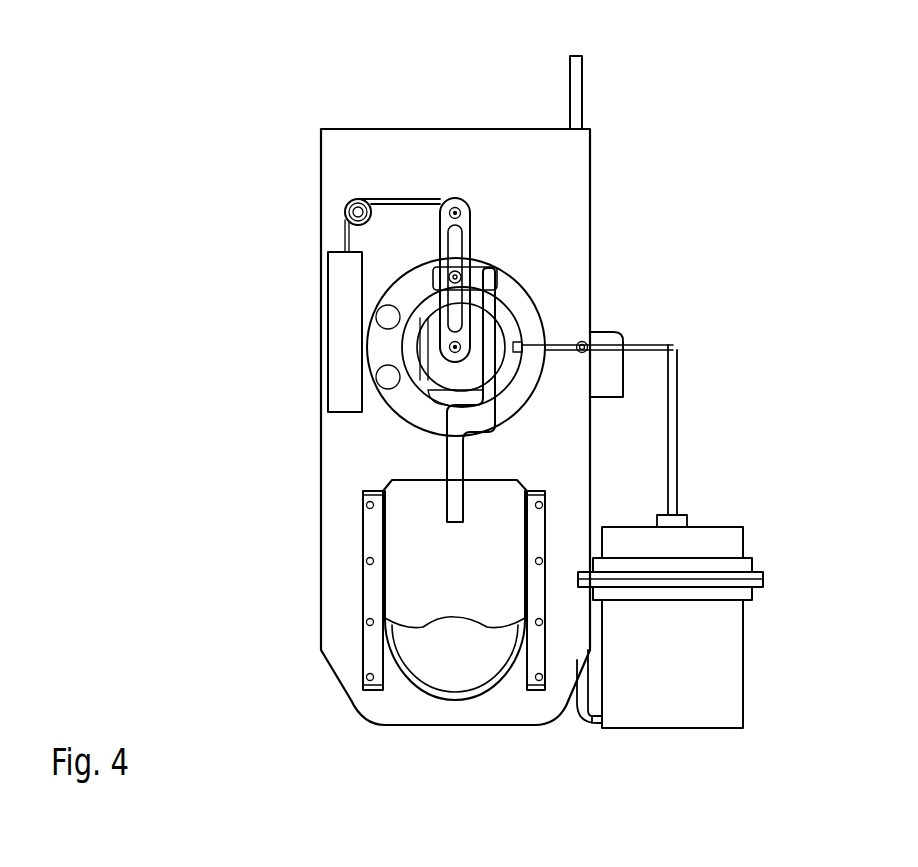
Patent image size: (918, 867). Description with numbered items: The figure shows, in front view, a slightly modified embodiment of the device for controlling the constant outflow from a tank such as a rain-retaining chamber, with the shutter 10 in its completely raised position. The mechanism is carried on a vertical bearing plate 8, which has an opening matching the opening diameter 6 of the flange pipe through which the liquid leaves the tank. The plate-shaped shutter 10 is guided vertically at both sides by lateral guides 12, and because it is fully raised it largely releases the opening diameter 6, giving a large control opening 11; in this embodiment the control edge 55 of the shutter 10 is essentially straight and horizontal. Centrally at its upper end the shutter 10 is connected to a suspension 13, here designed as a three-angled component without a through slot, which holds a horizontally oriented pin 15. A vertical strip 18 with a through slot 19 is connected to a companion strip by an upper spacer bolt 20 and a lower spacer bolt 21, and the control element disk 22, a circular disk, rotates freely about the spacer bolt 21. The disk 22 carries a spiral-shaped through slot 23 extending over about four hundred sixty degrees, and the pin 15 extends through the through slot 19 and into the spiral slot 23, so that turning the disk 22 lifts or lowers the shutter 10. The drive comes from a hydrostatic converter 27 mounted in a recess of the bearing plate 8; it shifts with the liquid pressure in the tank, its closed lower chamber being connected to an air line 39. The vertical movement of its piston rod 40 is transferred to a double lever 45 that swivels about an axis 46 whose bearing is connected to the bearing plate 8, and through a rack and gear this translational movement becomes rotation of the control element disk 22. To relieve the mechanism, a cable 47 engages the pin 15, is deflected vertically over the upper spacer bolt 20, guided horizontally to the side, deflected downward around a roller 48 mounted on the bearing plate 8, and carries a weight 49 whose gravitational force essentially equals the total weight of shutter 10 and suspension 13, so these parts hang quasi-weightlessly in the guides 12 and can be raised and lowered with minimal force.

The opening diameter 6 is at (408, 668).
The bearing plate 8 is at (575, 168).
The shutter 10 is at (420, 538).
The control opening 11 is at (452, 662).
The lateral guides 12 is at (375, 583).
The suspension 13 is at (490, 390).
The pin 15 is at (461, 274).
The strip 18 is at (466, 222).
The through slot 19 is at (458, 238).
The spacer bolt 20 is at (455, 207).
The spacer bolt 21 is at (450, 347).
The control element disk 22 is at (417, 283).
The spiral-shaped through slot 23 is at (513, 318).
The hydrostatic converter 27 is at (730, 663).
The line 39 is at (575, 85).
The piston rod 40 is at (677, 420).
The double lever 45 is at (634, 331).
The axis 46 is at (585, 343).
The cable 47 is at (402, 199).
The roller 48 is at (346, 214).
The weight 49 is at (340, 286).
The control edge 55 is at (477, 622).